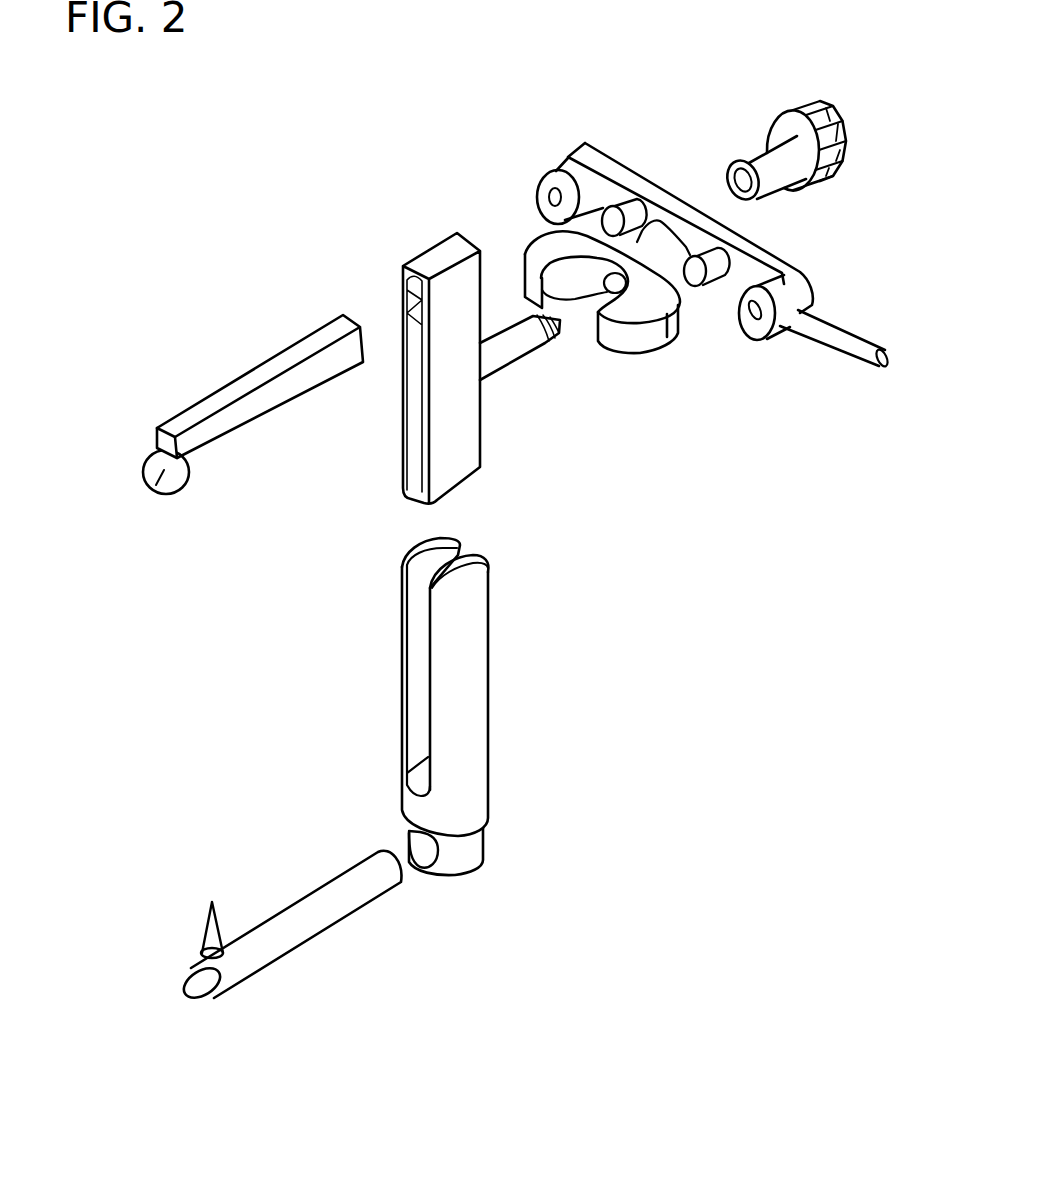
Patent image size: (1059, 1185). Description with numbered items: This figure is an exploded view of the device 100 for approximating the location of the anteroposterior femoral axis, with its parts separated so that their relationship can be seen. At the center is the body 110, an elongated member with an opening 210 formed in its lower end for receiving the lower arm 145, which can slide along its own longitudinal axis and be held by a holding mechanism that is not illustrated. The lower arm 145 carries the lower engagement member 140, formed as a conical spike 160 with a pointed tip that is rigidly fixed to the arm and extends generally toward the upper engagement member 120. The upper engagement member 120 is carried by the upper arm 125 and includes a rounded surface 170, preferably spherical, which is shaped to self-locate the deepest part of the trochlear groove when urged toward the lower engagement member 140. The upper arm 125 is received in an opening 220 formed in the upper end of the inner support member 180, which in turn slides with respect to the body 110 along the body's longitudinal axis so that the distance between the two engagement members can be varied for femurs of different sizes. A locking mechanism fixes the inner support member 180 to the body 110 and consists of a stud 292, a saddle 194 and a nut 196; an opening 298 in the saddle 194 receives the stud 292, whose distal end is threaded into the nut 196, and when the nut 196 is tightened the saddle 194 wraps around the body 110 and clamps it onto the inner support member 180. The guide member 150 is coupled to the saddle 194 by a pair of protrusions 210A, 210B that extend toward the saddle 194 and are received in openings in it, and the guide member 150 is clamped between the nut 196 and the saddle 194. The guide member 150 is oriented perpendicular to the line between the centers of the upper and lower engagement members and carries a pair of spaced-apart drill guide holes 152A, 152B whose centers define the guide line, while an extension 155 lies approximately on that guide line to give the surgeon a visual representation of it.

The device 100 is at (160, 232).
The body 110 is at (460, 793).
The upper engagement member 120 is at (155, 460).
The upper arm 125 is at (250, 386).
The lower engagement member 140 is at (203, 946).
The lower arm 145 is at (275, 946).
The guide member 150 is at (598, 162).
The drill guide hole 152A is at (553, 197).
The drill guide hole 152B is at (783, 333).
The extension 155 is at (813, 313).
The spike 160 is at (208, 908).
The rounded surface 170 is at (148, 490).
The inner support member 180 is at (417, 268).
The saddle 194 is at (630, 337).
The nut 196 is at (775, 117).
The opening 210 is at (427, 847).
The protrusion 210A is at (632, 212).
The protrusion 210B is at (700, 274).
The opening 220 is at (417, 300).
The stud 292 is at (510, 352).
The opening 298 is at (528, 254).